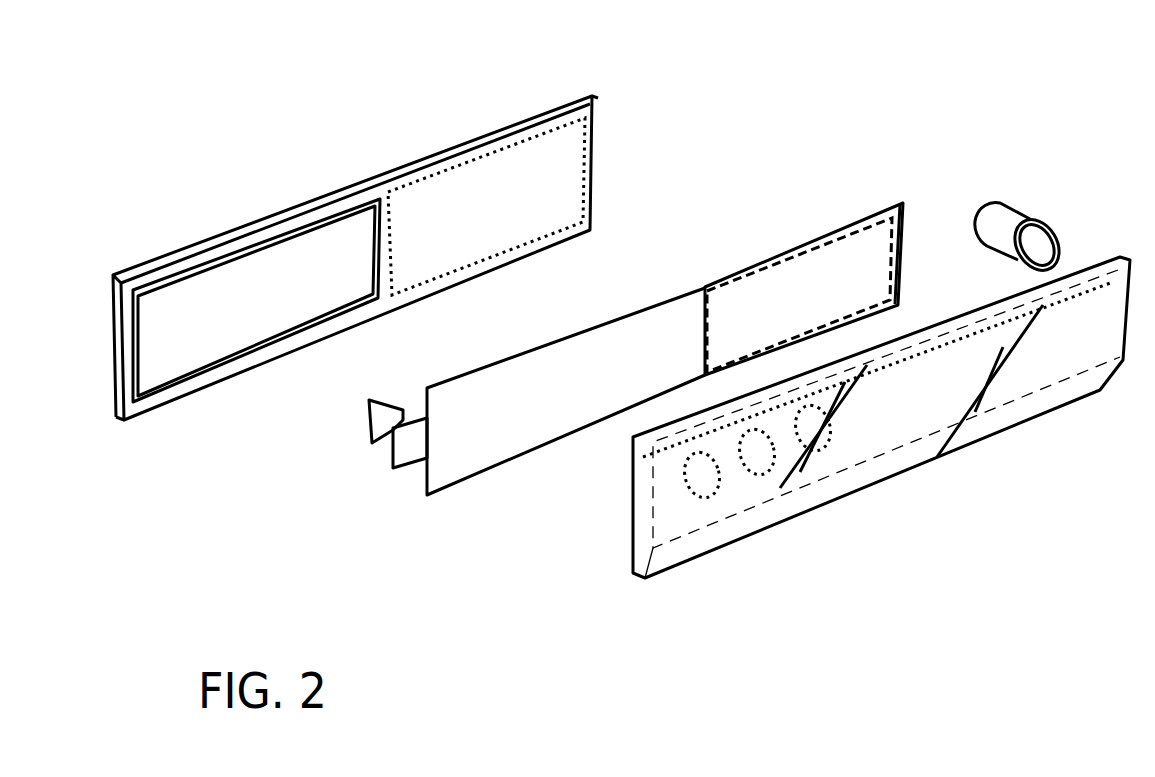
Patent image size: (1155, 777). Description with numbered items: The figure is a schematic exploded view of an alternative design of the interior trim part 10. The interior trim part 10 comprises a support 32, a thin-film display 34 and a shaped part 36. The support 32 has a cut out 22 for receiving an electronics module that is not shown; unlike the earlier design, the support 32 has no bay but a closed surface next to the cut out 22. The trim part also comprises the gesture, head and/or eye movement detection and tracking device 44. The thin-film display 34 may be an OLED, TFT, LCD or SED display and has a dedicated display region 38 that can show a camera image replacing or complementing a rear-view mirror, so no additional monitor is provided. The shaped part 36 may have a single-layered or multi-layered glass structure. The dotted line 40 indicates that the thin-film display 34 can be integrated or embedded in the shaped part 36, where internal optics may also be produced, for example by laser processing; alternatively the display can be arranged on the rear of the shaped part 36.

The interior trim part 10 is at (845, 117).
The cut out 22 is at (152, 372).
The support 32 is at (113, 363).
The thin-film display 34 is at (515, 437).
The shaped part 36 is at (738, 518).
The dedicated display region 38 is at (873, 208).
The dotted line 40 is at (1058, 300).
The gesture, head and/or eye movement detection and tracking device 44 is at (1037, 220).